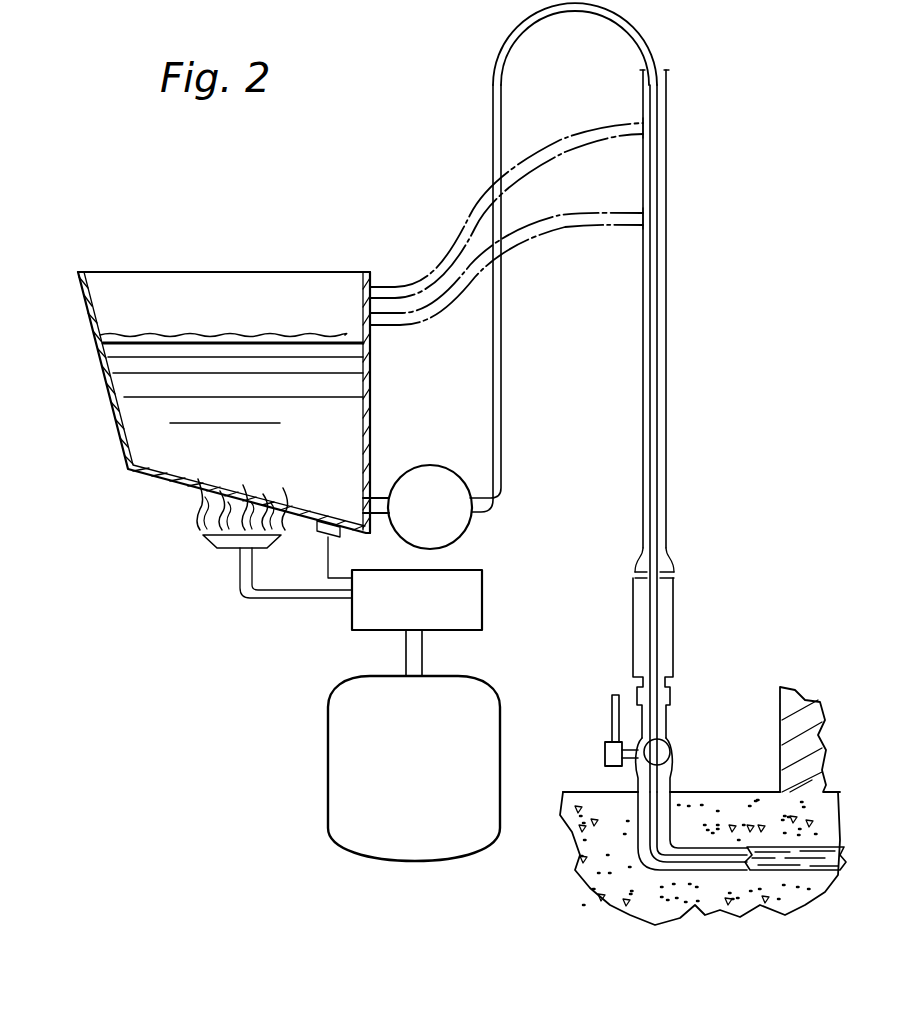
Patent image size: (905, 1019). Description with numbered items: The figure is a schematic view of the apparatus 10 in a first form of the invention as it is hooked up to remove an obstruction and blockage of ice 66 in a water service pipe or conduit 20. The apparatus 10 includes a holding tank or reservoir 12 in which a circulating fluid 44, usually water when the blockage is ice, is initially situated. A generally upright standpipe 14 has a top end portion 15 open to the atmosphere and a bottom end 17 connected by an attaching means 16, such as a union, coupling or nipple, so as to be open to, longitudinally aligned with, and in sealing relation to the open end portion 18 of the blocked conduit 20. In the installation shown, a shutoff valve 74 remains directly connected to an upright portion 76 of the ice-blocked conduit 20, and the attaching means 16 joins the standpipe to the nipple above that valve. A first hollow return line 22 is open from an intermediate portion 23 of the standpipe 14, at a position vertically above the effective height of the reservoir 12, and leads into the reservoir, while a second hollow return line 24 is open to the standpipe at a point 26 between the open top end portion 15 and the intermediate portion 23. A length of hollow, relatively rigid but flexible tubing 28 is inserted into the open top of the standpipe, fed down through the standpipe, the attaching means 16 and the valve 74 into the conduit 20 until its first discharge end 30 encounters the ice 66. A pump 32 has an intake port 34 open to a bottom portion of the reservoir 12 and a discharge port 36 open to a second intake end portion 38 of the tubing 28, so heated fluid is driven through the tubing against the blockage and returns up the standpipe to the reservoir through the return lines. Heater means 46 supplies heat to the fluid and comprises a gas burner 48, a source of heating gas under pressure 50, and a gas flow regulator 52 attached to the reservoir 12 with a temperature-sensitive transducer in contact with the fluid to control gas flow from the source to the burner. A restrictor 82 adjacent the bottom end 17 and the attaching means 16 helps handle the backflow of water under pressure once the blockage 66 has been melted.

The apparatus 10 is at (118, 222).
The holding tank or reservoir 12 is at (150, 292).
The circulating fluid 44 is at (150, 383).
The gas burner 48 is at (215, 543).
The heater means 46 is at (356, 699).
The source of heating gas under pressure 50 is at (343, 820).
The gas flow regulator 52 is at (448, 622).
The pump 32 is at (410, 536).
The intake port 34 is at (380, 498).
The discharge port 36 is at (482, 470).
The second intake end portion 38 is at (474, 525).
The flexible tubing 28 is at (650, 18).
The top end portion 15 is at (666, 83).
The standpipe 14 is at (667, 256).
The bottom end 17 is at (668, 512).
The second hollow return line 24 is at (440, 268).
The point 26 is at (643, 126).
The first hollow return line 22 is at (583, 224).
The intermediate portion 23 is at (643, 217).
The restrictor 82 is at (636, 574).
The attaching means 16 is at (633, 640).
The open end portion 18 is at (678, 753).
The shutoff valve 74 is at (666, 746).
The upright portion 76 is at (640, 786).
The water service pipe or conduit 20 is at (838, 880).
The first discharge end 30 is at (705, 856).
The ice 66 is at (790, 860).